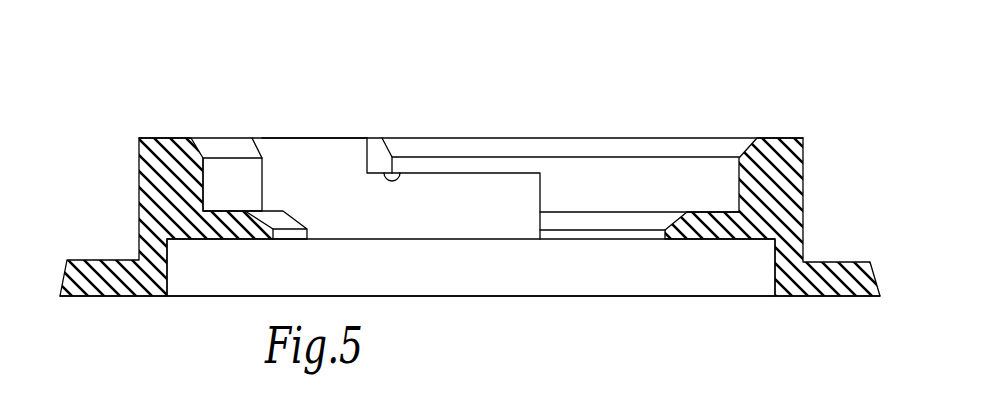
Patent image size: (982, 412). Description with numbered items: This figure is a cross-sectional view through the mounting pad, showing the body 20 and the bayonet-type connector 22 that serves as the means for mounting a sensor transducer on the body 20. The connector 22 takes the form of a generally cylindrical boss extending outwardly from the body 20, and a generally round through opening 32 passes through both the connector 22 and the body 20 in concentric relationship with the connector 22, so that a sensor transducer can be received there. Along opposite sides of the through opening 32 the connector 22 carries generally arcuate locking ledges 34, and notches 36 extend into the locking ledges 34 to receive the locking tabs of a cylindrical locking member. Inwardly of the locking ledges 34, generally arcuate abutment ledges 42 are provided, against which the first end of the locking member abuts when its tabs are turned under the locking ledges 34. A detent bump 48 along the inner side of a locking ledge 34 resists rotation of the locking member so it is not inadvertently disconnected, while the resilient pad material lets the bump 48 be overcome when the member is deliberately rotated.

The body 20 is at (117, 298).
The bayonet-type connector 22 is at (803, 170).
The through opening 32 is at (470, 297).
The locking ledge 34 is at (450, 173).
The notch 36 is at (288, 152).
The abutment ledge 42 is at (236, 214).
The detent bump 48 is at (392, 181).